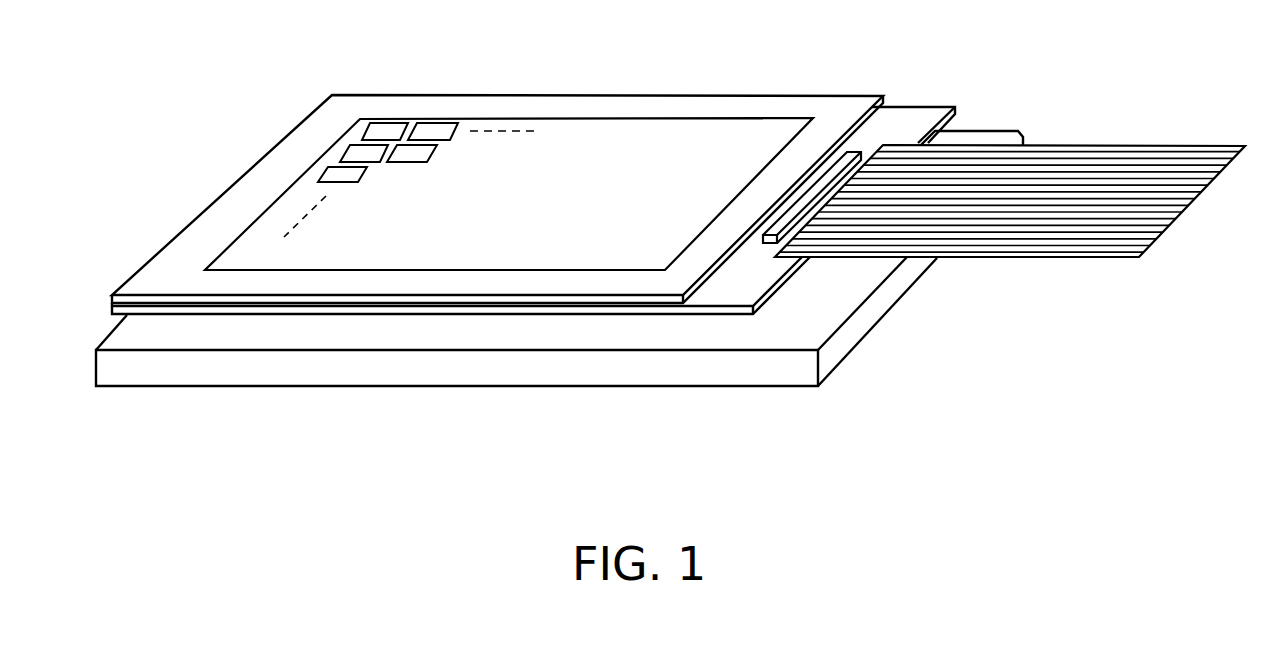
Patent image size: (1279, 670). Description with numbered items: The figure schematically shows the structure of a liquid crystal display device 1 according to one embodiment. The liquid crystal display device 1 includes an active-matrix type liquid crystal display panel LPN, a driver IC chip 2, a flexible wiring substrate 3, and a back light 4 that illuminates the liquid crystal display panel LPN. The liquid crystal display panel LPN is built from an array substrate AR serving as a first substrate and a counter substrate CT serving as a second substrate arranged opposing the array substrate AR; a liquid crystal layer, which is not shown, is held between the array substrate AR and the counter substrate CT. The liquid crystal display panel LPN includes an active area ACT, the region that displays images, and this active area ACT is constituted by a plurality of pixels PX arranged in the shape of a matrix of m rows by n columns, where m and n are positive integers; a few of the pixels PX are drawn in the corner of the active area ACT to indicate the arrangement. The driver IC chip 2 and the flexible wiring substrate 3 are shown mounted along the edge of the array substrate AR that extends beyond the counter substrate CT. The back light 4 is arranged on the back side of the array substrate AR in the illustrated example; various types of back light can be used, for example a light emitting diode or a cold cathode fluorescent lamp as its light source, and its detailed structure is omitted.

The liquid crystal display device 1 is at (987, 56).
The driver IC chip 2 is at (846, 156).
The flexible wiring substrate 3 is at (1174, 146).
The back light 4 is at (122, 372).
The pixel PX is at (394, 117).
The active area ACT is at (431, 276).
The counter substrate CT is at (536, 302).
The array substrate AR is at (600, 312).
The liquid crystal display panel LPN is at (722, 338).